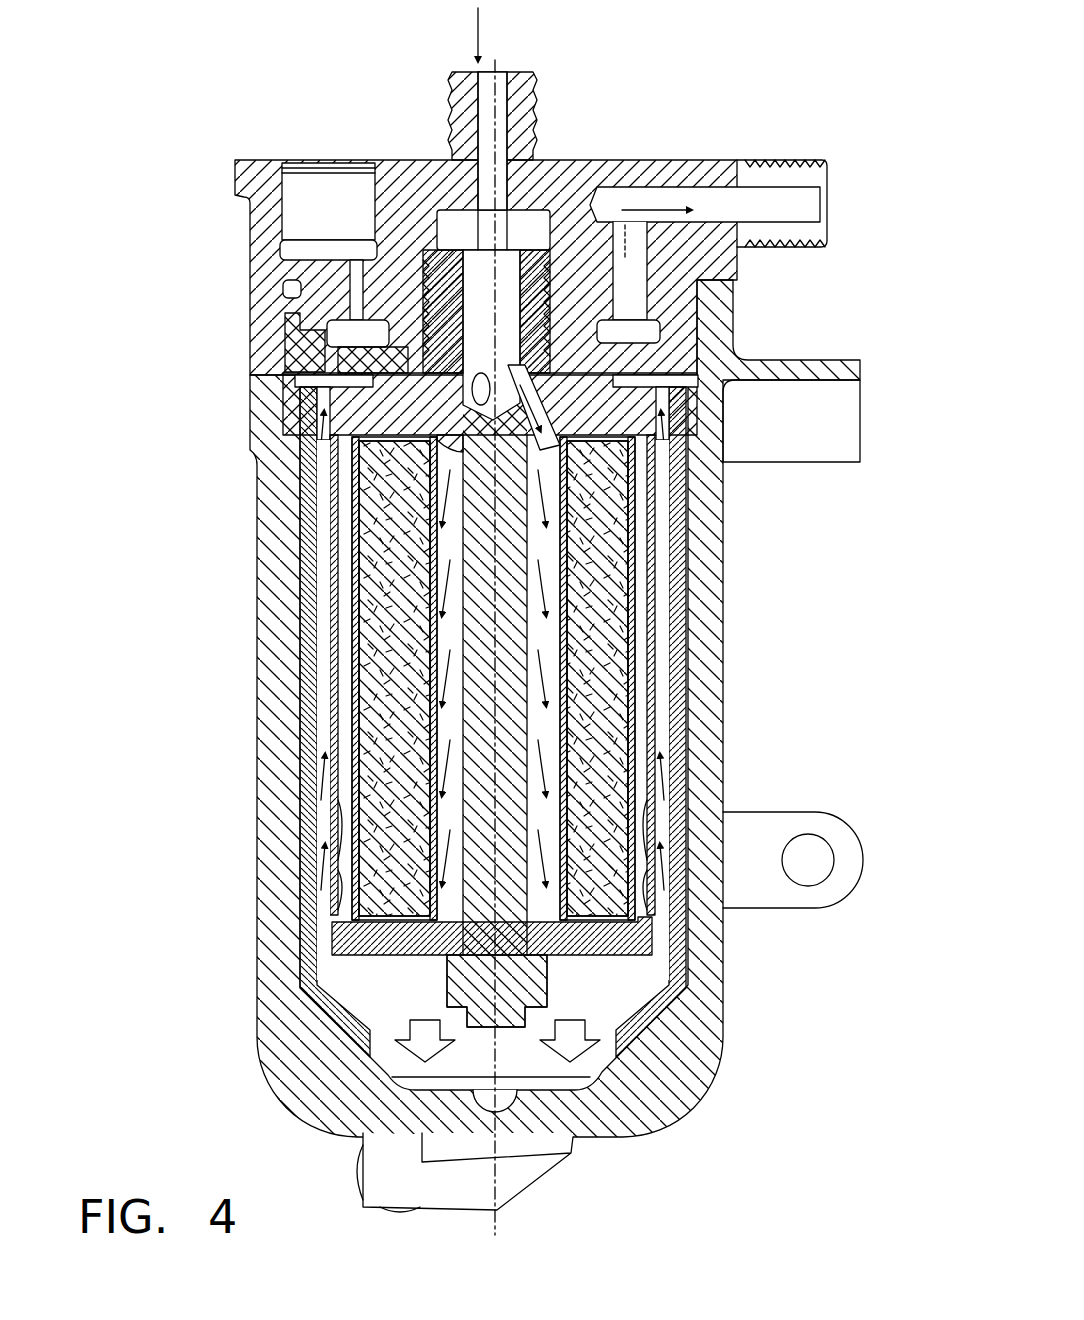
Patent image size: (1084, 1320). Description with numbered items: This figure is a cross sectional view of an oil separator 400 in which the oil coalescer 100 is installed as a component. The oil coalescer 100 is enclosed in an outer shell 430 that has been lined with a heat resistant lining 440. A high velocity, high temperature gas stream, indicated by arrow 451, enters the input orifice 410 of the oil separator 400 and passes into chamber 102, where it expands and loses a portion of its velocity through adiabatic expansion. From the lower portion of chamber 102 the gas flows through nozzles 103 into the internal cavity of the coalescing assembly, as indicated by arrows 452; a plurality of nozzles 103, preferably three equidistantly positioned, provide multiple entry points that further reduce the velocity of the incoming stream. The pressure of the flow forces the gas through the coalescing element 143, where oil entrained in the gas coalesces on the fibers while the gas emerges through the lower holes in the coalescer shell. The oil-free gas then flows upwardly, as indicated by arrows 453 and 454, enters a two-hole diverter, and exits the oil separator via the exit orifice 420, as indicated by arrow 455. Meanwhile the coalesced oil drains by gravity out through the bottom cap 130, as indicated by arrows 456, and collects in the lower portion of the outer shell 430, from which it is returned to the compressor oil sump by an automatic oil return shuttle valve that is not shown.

The oil separator 400 is at (220, 52).
The arrow indicating gas stream entry 451 is at (478, 26).
The input orifice 410 is at (510, 70).
The arrow indicating gas exit 455 is at (638, 198).
The exit orifice 420 is at (829, 192).
The chamber 102 is at (480, 255).
The nozzle 103 is at (398, 384).
The arrows indicating gas flow through nozzles 452 is at (472, 416).
The arrows indicating upward gas flow 454 is at (312, 422).
The heat resistant lining 440 is at (302, 520).
The oil coalescer 100 is at (647, 640).
The coalescing element 143 is at (354, 670).
The outer shell 430 is at (724, 690).
The arrows indicating upward gas flow 453 is at (670, 772).
The bottom cap 130 is at (655, 936).
The arrows indicating oil drainage 456 is at (420, 1018).